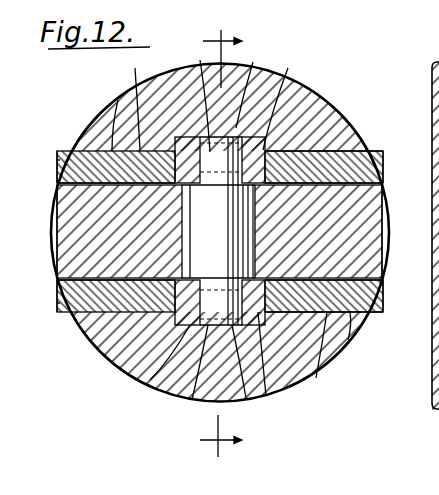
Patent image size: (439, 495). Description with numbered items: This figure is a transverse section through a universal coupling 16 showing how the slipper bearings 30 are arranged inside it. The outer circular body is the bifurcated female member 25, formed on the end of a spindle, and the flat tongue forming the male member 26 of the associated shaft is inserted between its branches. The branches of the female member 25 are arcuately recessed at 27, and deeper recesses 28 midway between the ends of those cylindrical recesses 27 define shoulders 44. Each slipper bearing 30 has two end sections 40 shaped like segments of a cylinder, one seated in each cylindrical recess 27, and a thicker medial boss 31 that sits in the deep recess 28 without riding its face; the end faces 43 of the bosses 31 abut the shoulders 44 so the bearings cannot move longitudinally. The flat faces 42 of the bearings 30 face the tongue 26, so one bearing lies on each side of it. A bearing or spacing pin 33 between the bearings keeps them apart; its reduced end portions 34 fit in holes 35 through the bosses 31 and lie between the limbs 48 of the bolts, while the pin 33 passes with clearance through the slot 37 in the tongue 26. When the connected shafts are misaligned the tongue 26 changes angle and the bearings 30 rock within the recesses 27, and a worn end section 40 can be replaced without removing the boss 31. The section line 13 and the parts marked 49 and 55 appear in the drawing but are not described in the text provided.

The section line 13- 13 is at (218, 247).
The universal coupling 16 is at (96, 108).
The female member 25 is at (300, 110).
The male member 26 is at (370, 215).
The cylindrical recesses 27 is at (118, 100).
The deep recesses 28 is at (253, 63).
The slipper bearings 30 is at (140, 150).
The boss 31 is at (290, 66).
The bearing pin 33 is at (197, 218).
The reduced end portions 34 is at (200, 60).
The holes 35 is at (246, 398).
The slot 37 is at (257, 243).
The end sections 40 is at (57, 152).
The flat faces 42 is at (80, 187).
The end faces 43 is at (195, 138).
The shoulders 44 is at (318, 127).
The limbs 48 is at (352, 148).
The band edge 49 is at (393, 157).
The band flange 55 is at (58, 165).